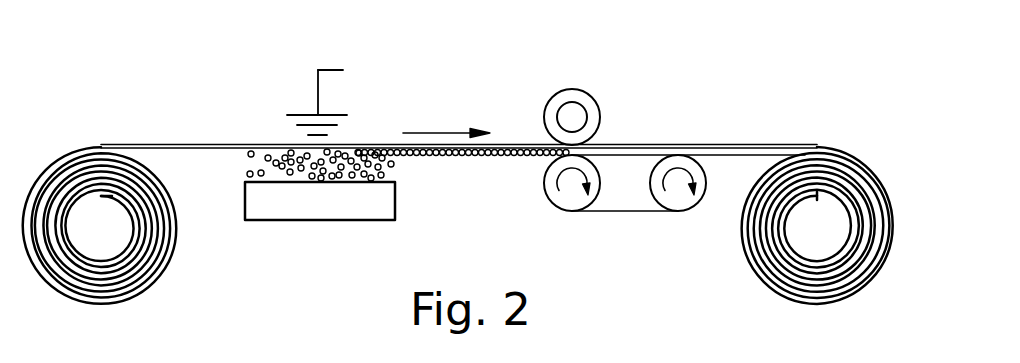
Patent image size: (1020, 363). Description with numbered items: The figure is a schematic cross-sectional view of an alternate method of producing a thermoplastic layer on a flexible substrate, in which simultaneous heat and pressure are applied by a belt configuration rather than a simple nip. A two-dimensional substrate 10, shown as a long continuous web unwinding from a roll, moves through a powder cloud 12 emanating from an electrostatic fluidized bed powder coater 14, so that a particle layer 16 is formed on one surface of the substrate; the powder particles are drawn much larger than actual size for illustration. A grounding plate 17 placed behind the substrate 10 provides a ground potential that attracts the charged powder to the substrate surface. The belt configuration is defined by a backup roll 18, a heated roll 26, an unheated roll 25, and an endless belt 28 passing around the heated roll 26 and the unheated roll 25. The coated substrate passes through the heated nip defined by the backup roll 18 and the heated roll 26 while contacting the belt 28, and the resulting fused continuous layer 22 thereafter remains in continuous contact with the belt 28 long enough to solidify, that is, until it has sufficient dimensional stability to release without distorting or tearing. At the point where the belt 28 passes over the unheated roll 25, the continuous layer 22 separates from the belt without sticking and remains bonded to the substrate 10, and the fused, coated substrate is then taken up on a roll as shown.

The two-dimensional substrate 10 is at (216, 143).
The powder cloud 12 is at (258, 168).
The electrostatic fluidized bed powder coater 14 is at (377, 201).
The particle layer 16 is at (500, 156).
The grounding plate 17 is at (318, 90).
The backup roll 18 is at (580, 100).
The fused continuous layer 22 is at (732, 155).
The unheated roll 25 is at (688, 200).
The heated roll 26 is at (563, 197).
The endless belt 28 is at (630, 212).